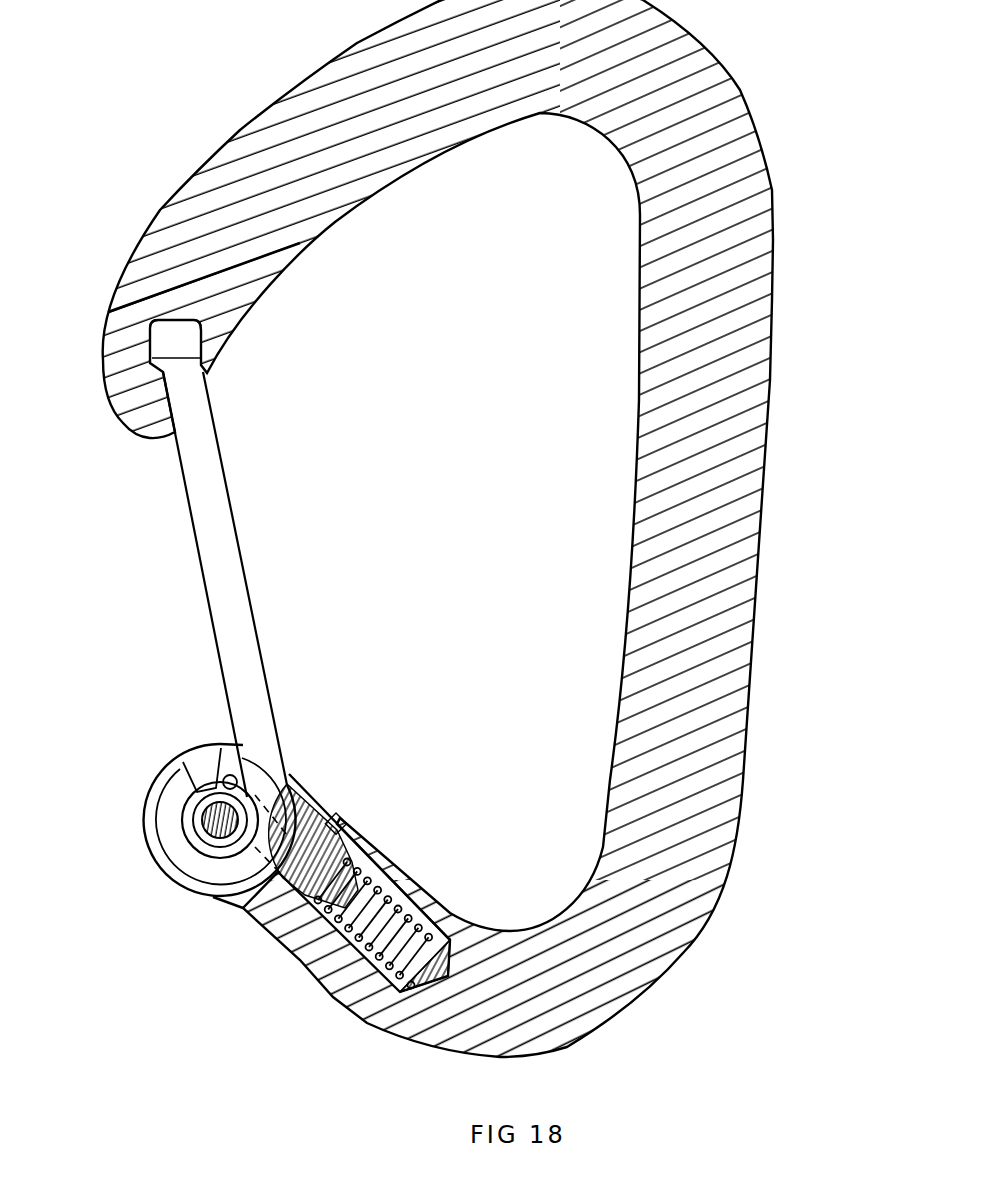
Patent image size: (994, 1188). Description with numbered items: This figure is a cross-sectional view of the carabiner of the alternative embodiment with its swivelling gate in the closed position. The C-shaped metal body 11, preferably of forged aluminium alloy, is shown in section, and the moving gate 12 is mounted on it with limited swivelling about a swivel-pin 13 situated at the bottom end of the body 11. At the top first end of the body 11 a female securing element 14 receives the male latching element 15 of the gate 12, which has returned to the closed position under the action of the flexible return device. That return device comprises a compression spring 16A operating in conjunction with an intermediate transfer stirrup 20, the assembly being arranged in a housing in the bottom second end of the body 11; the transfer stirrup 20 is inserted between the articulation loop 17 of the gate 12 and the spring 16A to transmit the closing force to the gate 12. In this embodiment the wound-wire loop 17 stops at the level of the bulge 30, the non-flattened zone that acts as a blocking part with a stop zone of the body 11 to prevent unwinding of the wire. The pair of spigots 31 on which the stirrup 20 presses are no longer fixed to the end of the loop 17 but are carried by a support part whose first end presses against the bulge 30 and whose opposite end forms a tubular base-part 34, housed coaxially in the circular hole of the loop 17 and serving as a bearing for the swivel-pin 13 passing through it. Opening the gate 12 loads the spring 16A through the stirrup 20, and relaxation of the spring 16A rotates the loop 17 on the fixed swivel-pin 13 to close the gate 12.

The body 11 is at (750, 192).
The moving gate 12 is at (220, 537).
The swivel-pin 13 is at (221, 822).
The female securing element 14 is at (103, 372).
The male latching element 15 is at (185, 335).
The compression spring 16A is at (400, 910).
The articulation loop 17 is at (167, 812).
The intermediate transfer stirrup 20 is at (347, 837).
The bulge 30 is at (205, 762).
The spigots 31 is at (240, 772).
The tubular base-part 34 is at (223, 850).